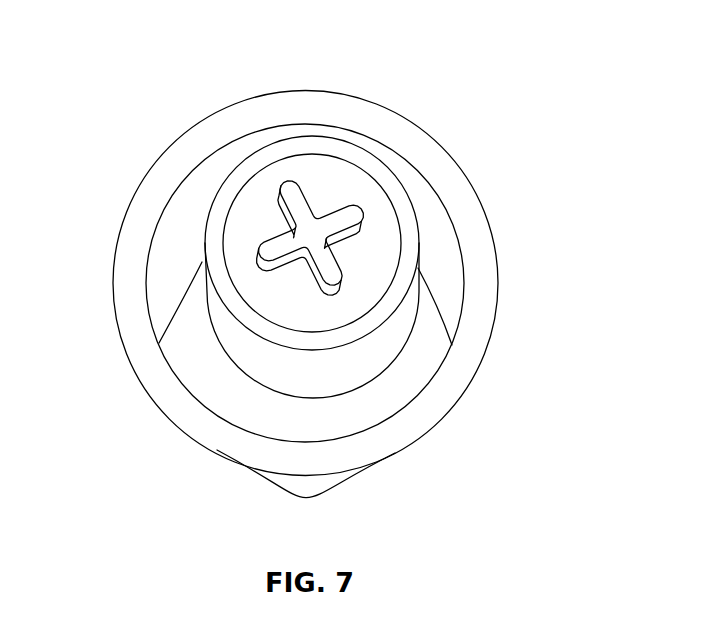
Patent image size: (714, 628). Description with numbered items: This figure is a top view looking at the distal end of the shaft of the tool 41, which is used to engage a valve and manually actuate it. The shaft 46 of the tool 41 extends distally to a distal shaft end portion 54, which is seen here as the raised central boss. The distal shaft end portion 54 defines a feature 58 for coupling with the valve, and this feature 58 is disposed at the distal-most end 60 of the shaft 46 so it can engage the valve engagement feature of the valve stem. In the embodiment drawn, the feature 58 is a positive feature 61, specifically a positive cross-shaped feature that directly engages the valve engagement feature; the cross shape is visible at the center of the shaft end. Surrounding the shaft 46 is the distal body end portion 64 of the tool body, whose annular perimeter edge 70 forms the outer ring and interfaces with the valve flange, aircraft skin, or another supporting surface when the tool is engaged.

The tool 41 is at (478, 78).
The shaft 46 is at (405, 247).
The distal shaft end portion 54 is at (400, 302).
The feature 58 is at (400, 210).
The distal-most end 60 is at (327, 187).
The positive feature 61 is at (400, 210).
The distal body end portion 64 is at (190, 418).
The annular perimeter edge 70 is at (172, 168).